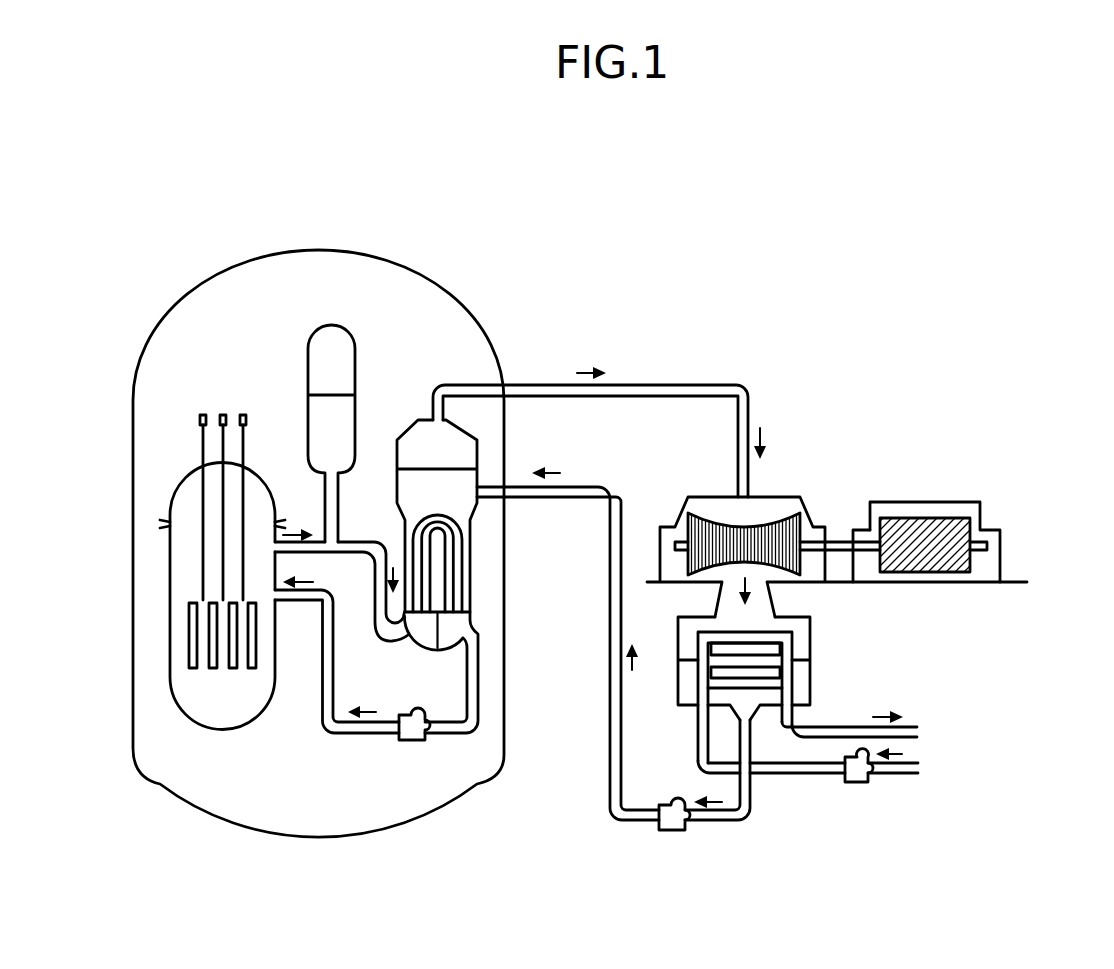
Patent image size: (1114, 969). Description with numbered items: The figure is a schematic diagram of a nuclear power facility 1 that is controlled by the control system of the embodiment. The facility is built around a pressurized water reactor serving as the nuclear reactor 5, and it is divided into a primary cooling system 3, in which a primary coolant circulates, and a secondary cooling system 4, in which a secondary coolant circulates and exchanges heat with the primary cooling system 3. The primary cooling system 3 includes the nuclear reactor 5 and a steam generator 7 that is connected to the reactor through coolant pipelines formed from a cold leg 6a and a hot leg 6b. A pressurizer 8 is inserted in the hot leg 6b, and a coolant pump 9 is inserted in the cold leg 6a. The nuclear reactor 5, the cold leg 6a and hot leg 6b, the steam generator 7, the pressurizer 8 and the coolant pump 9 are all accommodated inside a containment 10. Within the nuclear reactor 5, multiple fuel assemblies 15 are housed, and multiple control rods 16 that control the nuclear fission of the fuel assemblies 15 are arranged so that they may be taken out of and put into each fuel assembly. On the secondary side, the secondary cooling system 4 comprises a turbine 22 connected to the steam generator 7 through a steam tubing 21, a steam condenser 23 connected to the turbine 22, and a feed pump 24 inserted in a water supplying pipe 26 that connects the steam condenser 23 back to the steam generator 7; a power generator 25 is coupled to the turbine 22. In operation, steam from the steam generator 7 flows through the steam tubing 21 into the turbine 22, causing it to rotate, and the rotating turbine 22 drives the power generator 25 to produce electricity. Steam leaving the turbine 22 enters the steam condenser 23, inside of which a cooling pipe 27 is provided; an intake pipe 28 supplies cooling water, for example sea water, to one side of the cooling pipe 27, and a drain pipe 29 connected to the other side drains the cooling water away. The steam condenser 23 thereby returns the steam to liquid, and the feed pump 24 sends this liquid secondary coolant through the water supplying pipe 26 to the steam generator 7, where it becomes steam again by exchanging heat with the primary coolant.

The nuclear power facility 1 is at (119, 141).
The primary cooling system 3 is at (154, 370).
The secondary cooling system 4 is at (830, 364).
The nuclear reactor 5 is at (167, 485).
The cold leg 6a is at (345, 734).
The hot leg 6b is at (363, 541).
The steam generator 7 is at (416, 419).
The pressurizer 8 is at (308, 354).
The coolant pump 9 is at (412, 741).
The containment 10 is at (214, 268).
The fuel assemblies 15 is at (233, 668).
The control rods 16 is at (226, 436).
The steam tubing 21 is at (732, 384).
The turbine 22 is at (814, 484).
The steam condenser 23 is at (831, 643).
The feed pump 24 is at (670, 831).
The power generator 25 is at (995, 496).
The water supplying pipe 26 is at (608, 812).
The cooling pipe 27 is at (697, 643).
The intake pipe 28 is at (793, 775).
The drain pipe 29 is at (832, 726).